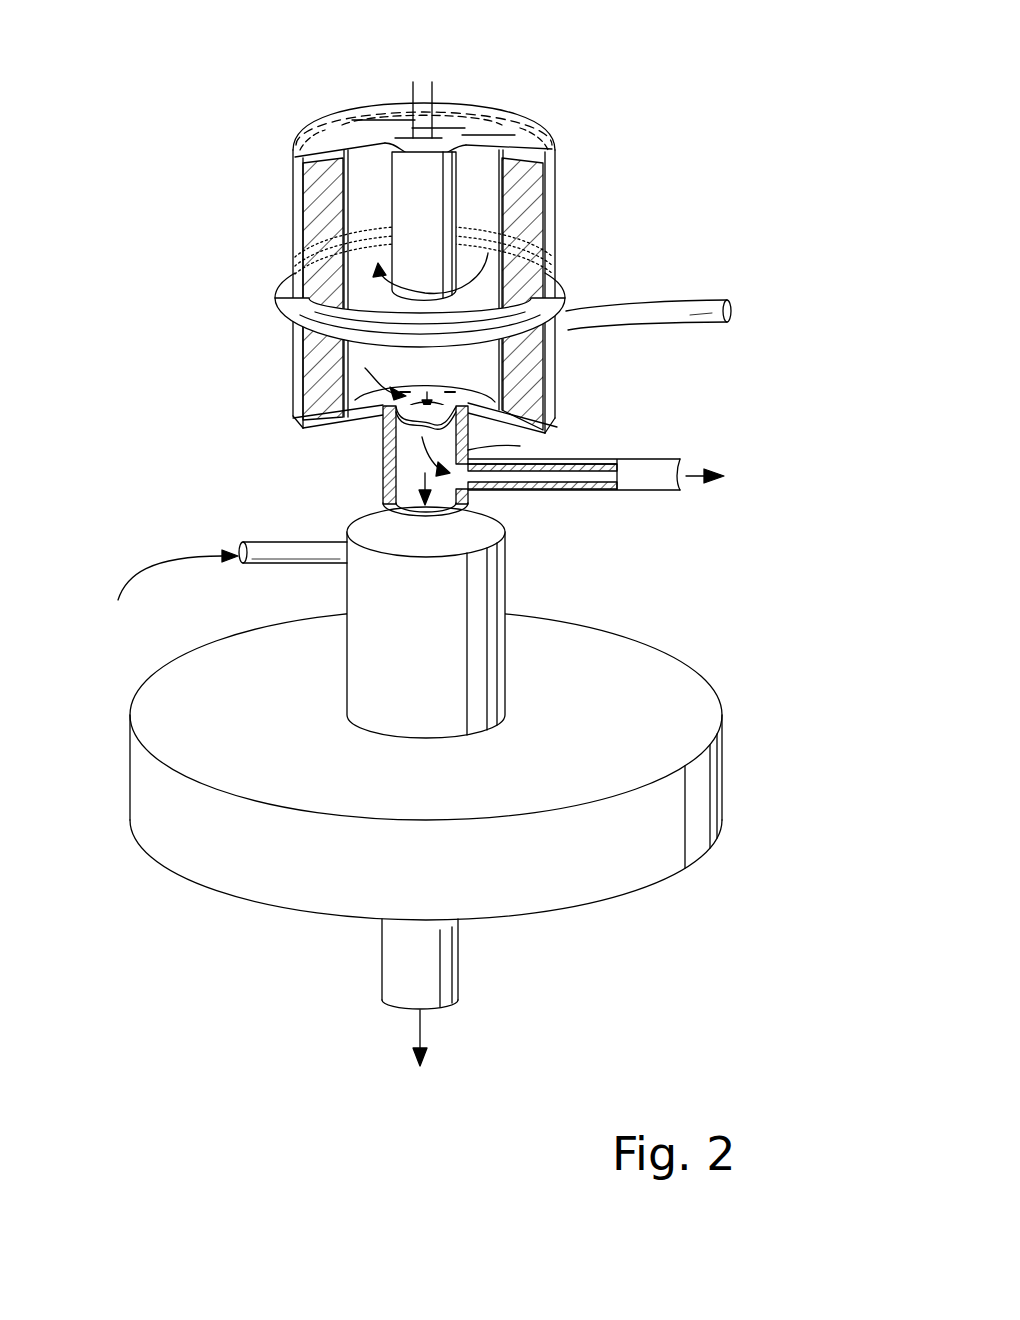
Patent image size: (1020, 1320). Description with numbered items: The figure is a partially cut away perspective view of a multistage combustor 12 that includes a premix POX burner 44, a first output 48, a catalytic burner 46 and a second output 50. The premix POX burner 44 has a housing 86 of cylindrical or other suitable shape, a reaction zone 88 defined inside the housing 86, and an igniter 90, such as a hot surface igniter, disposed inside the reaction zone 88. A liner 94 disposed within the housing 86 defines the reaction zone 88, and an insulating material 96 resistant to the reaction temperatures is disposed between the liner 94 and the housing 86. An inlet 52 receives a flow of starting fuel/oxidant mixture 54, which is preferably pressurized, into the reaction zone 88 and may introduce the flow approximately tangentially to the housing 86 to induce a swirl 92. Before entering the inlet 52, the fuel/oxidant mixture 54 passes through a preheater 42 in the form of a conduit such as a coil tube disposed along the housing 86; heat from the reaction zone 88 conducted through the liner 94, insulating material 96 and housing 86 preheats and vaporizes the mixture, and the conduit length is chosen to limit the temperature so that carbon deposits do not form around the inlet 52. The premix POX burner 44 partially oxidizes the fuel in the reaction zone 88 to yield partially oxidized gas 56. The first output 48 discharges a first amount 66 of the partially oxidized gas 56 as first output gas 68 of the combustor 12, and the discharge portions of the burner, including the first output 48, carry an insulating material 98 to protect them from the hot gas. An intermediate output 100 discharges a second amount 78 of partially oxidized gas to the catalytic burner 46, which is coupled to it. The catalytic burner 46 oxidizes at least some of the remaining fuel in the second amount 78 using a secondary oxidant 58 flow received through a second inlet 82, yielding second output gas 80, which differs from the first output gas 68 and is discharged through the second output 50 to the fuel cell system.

The combustor 12 is at (128, 1002).
The preheater 42 is at (277, 282).
The premix POX burner 44 is at (584, 140).
The catalytic burner 46 is at (660, 652).
The first output 48 is at (568, 492).
The second output 50 is at (460, 967).
The inlet 52 is at (426, 242).
The fuel/oxidant mixture 54 is at (752, 313).
The partially oxidized gas 56 is at (357, 385).
The secondary oxidant 58 is at (175, 592).
The first amount of partially oxidized gas 66 is at (520, 446).
The first output gas 68 is at (694, 478).
The second amount of partially oxidized gas 78 is at (385, 478).
The second output gas 80 is at (424, 1034).
The second inlet 82 is at (276, 565).
The housing 86 is at (293, 186).
The reaction zone 88 is at (473, 178).
The igniter 90 is at (376, 190).
The swirl 92 is at (292, 314).
The liner 94 is at (556, 252).
The insulating material 96 is at (328, 172).
The insulating material 98 is at (378, 431).
The intermediate output 100 is at (383, 506).